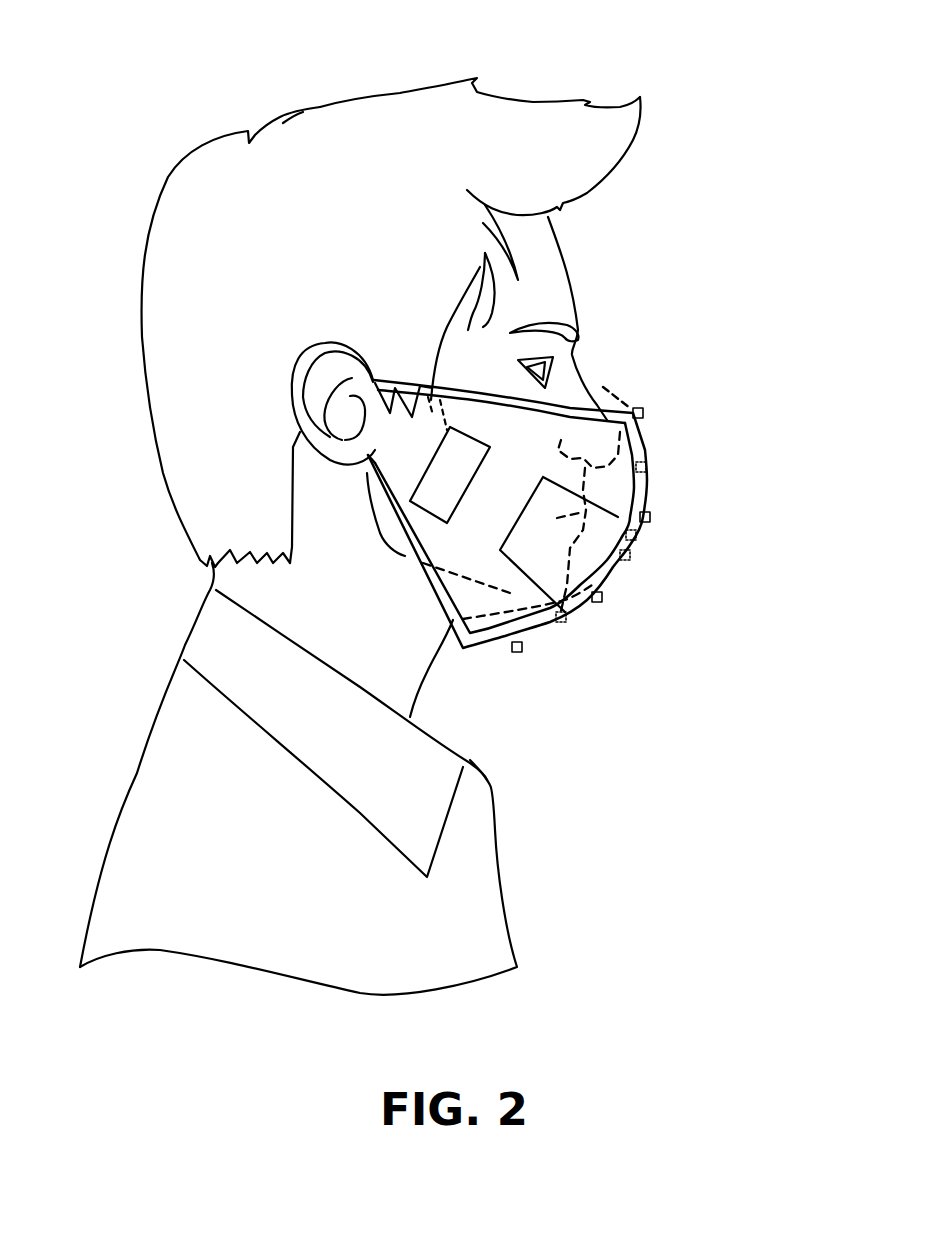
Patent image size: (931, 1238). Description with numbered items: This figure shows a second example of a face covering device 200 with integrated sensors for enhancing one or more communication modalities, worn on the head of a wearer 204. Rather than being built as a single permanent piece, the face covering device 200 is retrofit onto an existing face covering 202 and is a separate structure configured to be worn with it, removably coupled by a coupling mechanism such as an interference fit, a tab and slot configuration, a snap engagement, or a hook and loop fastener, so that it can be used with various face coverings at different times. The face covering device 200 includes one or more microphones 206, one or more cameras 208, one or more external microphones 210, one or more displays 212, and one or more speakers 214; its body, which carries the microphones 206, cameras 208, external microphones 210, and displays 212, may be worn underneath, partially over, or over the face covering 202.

The face covering device 200 is at (463, 658).
The face covering 202 is at (417, 558).
The wearer 204 is at (515, 100).
The microphones 206 is at (647, 470).
The cameras 208 is at (640, 415).
The external microphones 210 is at (650, 517).
The displays 212 is at (580, 567).
The speakers 214 is at (437, 493).